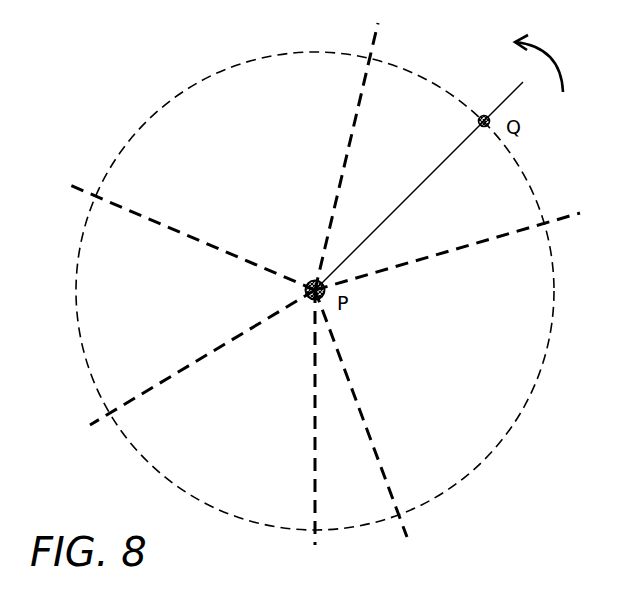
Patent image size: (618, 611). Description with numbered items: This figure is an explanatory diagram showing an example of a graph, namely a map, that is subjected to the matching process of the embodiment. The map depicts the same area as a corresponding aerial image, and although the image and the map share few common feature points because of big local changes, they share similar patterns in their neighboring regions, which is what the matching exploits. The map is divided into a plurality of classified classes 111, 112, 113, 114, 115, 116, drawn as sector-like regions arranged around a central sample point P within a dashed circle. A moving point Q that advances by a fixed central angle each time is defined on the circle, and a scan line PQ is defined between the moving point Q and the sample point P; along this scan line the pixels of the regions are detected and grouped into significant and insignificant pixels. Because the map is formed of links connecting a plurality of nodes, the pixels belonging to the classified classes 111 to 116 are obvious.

The classified class 111 is at (357, 156).
The classified class 112 is at (190, 236).
The classified class 113 is at (202, 357).
The classified class 114 is at (273, 417).
The classified class 115 is at (447, 284).
The classified class 116 is at (361, 413).